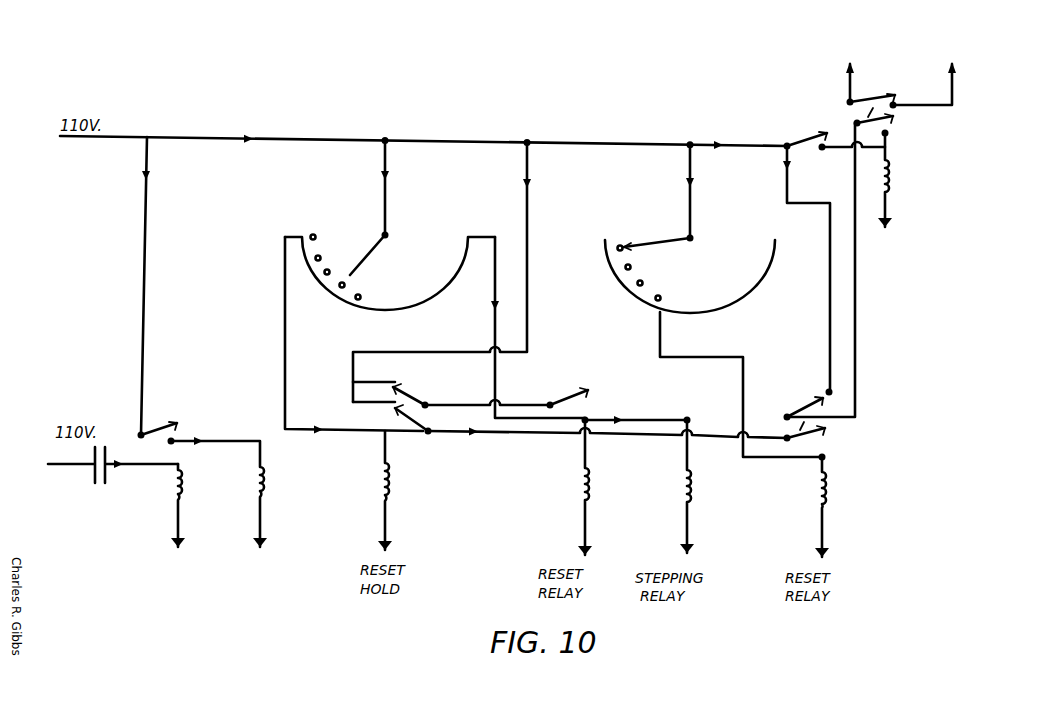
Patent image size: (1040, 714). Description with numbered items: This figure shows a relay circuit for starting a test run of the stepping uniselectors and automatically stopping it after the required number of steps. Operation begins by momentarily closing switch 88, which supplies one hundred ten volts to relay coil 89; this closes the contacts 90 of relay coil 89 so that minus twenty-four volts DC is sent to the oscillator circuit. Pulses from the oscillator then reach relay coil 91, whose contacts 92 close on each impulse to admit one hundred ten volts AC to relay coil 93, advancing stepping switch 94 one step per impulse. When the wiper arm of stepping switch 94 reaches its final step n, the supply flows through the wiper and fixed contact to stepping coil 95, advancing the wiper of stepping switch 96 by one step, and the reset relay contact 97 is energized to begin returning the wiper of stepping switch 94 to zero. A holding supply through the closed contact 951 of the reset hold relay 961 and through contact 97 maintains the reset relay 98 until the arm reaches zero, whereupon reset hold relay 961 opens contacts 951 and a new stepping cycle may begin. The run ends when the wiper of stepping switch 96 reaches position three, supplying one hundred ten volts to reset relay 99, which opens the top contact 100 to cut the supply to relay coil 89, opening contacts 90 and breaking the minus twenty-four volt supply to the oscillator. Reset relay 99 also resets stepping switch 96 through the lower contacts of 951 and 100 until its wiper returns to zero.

The switch 88 is at (807, 134).
The relay coil 89 is at (893, 166).
The relay contacts 90 is at (864, 92).
The relay coil 91 is at (182, 501).
The relay contacts 92 is at (156, 426).
The relay coil 93 is at (264, 501).
The stepping switch 94 is at (373, 252).
The stepping coil 95 is at (688, 504).
The stepping switch 96 is at (670, 247).
The reset relay contact 97 is at (563, 390).
The reset relay 98 is at (579, 496).
The reset relay 99 is at (821, 504).
The contact 100 is at (798, 404).
The contact 951 is at (410, 396).
The reset hold relay 961 is at (392, 488).